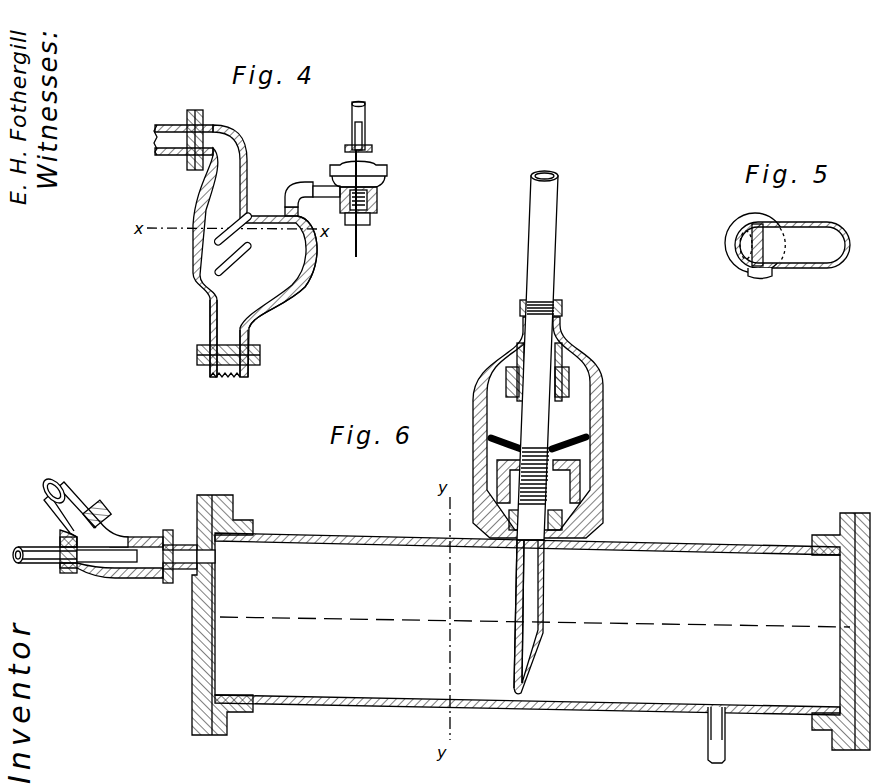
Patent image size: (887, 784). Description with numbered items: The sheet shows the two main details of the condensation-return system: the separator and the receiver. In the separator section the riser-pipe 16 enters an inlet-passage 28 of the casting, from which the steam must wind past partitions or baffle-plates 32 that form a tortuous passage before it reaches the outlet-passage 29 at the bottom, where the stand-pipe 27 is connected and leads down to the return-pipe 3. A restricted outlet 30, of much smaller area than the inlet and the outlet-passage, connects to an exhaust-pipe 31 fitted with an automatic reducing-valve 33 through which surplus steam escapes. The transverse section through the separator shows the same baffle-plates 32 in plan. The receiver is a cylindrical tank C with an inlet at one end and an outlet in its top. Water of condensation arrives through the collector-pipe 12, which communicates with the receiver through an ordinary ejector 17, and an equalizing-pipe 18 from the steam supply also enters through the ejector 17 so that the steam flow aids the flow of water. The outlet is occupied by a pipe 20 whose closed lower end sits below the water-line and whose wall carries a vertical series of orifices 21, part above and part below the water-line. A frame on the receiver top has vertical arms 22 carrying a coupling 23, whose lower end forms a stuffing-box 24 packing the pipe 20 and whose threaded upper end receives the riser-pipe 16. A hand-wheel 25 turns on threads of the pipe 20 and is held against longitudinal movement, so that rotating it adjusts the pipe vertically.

In FIG. 4, the return-pipe 3 is at (255, 240).
In FIG. 5, the return-pipe 3 is at (835, 233).
In FIG. 6, the collector-pipe 12 is at (65, 491).
In FIG. 4, the riser-pipe 16 is at (160, 139).
In FIG. 6, the riser-pipe 16 is at (550, 239).
In FIG. 6, the ejector 17 is at (128, 579).
In FIG. 6, the equalizing-pipe 18 is at (25, 562).
In FIG. 6, the outlet pipe 20 is at (538, 573).
In FIG. 6, the orifices 21 is at (516, 599).
In FIG. 6, the vertical arms 22 is at (476, 387).
In FIG. 6, the coupling 23 is at (566, 346).
In FIG. 6, the stuffing-box 24 is at (570, 382).
In FIG. 6, the hand-wheel 25 is at (593, 438).
In FIG. 4, the stand-pipe 27 is at (229, 378).
In FIG. 4, the inlet-passage 28 is at (217, 142).
In FIG. 4, the outlet-passage 29 is at (237, 331).
In FIG. 4, the outlet 30 is at (307, 265).
In FIG. 4, the exhaust-pipe 31 is at (313, 182).
In FIG. 4, the baffle-plates 32 is at (214, 247).
In FIG. 5, the baffle-plates 32 is at (762, 278).
In FIG. 4, the reducing-valve 33 is at (376, 169).
In FIG. 6, the cylinder C is at (366, 534).